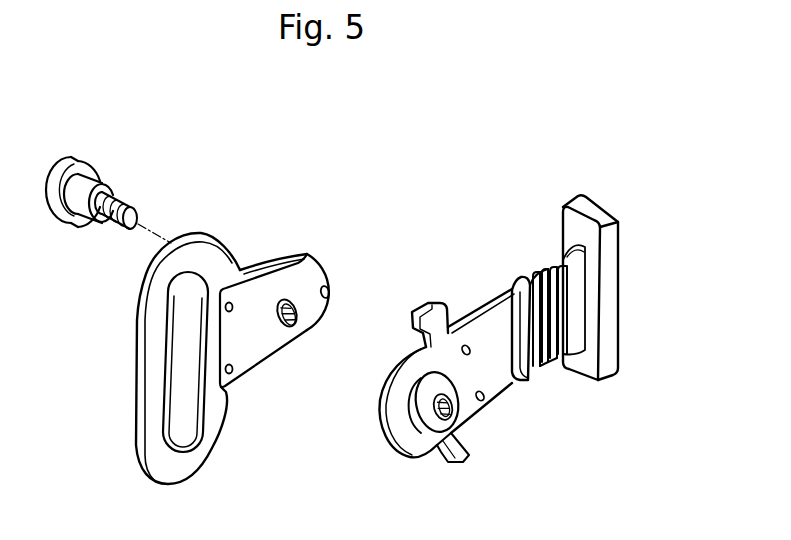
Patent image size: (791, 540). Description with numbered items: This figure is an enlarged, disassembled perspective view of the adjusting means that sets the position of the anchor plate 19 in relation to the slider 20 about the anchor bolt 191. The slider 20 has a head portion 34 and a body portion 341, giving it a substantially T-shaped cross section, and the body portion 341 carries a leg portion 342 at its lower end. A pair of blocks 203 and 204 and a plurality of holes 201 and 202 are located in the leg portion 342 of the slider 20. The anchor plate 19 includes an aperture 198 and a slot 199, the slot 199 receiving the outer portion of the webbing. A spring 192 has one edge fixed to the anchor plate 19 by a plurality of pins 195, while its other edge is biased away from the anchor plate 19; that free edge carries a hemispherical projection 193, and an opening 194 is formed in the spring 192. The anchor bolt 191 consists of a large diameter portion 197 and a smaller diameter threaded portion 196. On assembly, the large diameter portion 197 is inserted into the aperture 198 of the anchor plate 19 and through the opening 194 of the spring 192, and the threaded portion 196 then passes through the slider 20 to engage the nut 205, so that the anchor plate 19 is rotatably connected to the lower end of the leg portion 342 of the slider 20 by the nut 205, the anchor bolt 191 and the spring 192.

The anchor plate 19 is at (242, 350).
The anchor bolt 191 is at (113, 164).
The large diameter portion 197 is at (122, 198).
The smaller diameter threaded portion 196 is at (121, 196).
The spring 192 is at (313, 270).
The hemispherical projection 193 is at (331, 289).
The opening 194 is at (297, 311).
The pins 195 is at (233, 309).
The aperture 198 is at (287, 328).
The slot 199 is at (168, 408).
The slider 20 is at (473, 369).
The holes 201 is at (470, 351).
The holes 202 is at (481, 401).
The block 203 is at (433, 304).
The block 204 is at (463, 444).
The nut 205 is at (417, 420).
The leg portion 342 is at (501, 316).
The head portion 34 is at (586, 300).
The body portion 341 is at (572, 297).